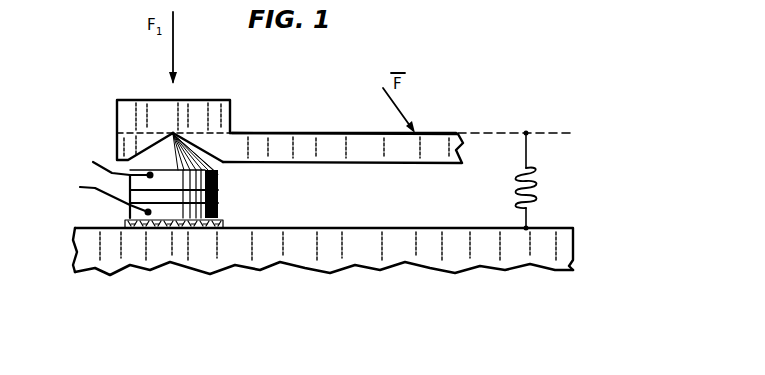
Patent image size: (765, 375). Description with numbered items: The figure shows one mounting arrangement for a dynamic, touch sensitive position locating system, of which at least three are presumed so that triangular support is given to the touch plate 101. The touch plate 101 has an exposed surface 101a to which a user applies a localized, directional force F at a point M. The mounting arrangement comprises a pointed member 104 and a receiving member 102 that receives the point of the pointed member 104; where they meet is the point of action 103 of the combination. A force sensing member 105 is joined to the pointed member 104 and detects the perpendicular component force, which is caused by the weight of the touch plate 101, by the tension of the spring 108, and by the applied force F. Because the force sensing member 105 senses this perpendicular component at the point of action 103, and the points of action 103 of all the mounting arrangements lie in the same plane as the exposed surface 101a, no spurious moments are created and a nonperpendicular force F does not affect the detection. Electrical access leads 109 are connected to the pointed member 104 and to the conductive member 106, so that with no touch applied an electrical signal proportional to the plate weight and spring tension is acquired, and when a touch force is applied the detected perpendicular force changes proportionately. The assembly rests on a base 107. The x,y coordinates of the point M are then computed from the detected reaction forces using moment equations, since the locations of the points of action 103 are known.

The touch plate 101 is at (396, 159).
The exposed surface 101a is at (292, 139).
The receiving member 102 is at (220, 112).
The point of action 103 is at (171, 130).
The pointed member 104 is at (218, 176).
The force sensing member 105 is at (219, 204).
The conductive member 106 is at (125, 219).
The base plate 107 is at (574, 258).
The spring 108 is at (538, 178).
The electrical access leads 109 is at (100, 170).